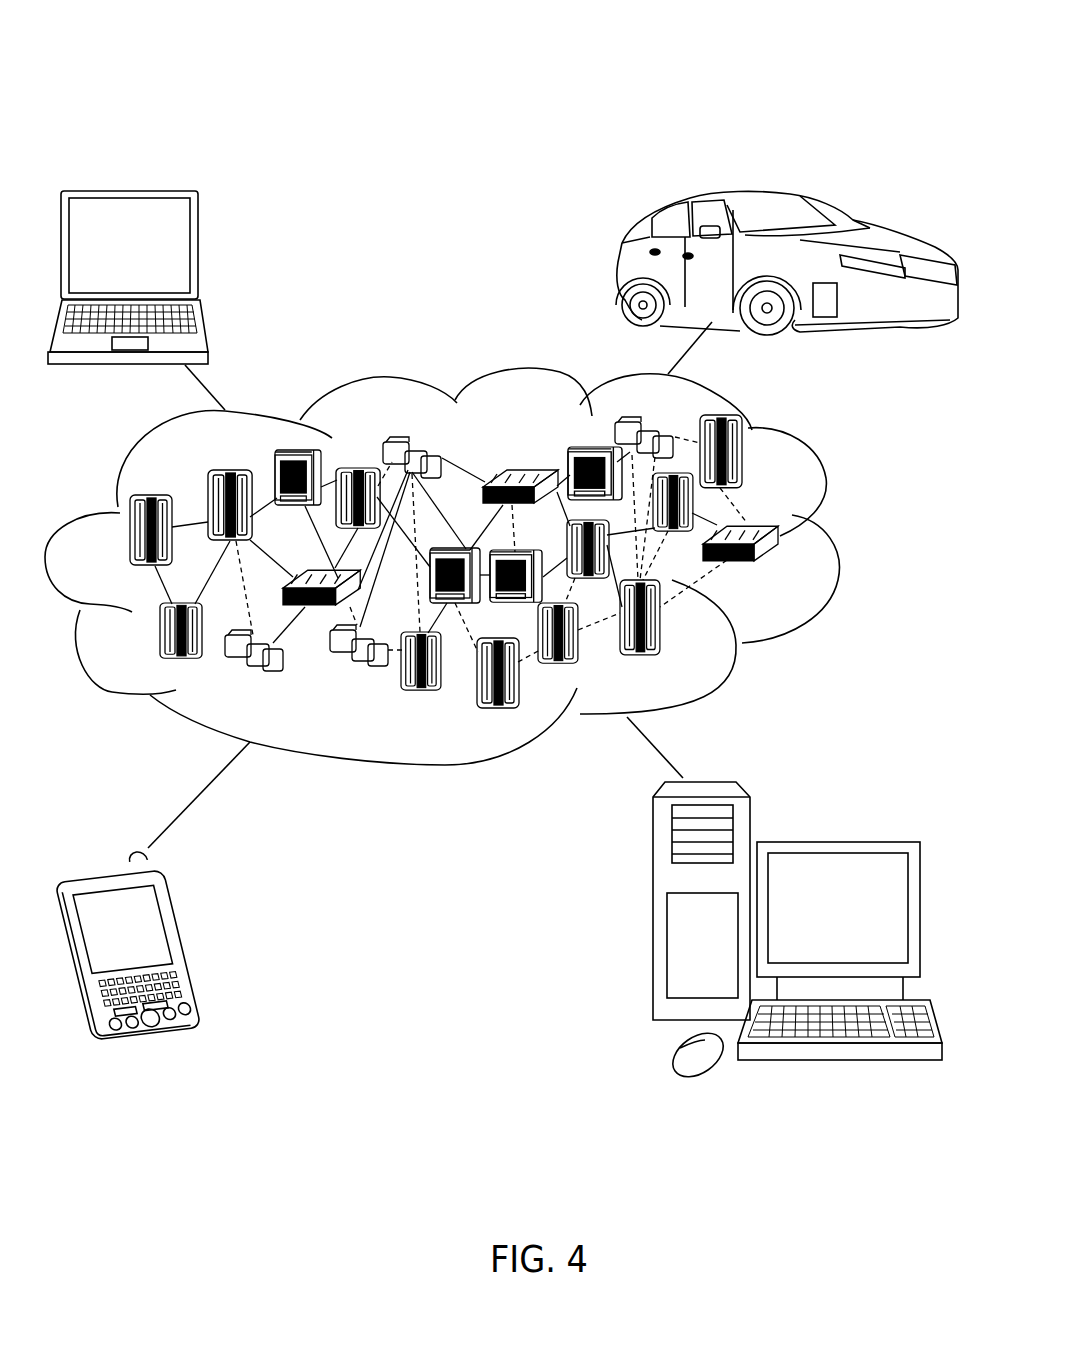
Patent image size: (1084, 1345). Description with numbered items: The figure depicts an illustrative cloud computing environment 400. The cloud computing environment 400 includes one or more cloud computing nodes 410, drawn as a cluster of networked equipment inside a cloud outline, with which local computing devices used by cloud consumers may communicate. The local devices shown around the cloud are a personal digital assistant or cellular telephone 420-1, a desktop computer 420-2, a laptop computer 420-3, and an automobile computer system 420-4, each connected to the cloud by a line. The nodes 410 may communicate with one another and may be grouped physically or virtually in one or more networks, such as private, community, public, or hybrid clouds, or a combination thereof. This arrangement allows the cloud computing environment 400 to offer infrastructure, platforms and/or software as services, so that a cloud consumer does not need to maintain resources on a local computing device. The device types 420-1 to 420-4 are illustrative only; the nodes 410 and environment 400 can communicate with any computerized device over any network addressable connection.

The cloud computing environment 400 is at (781, 50).
The cloud computing nodes 410 is at (469, 566).
The personal digital assistant or cellular telephone 420-1 is at (188, 938).
The desktop computer 420-2 is at (848, 818).
The laptop computer 420-3 is at (199, 253).
The automobile computer system 420-4 is at (623, 272).